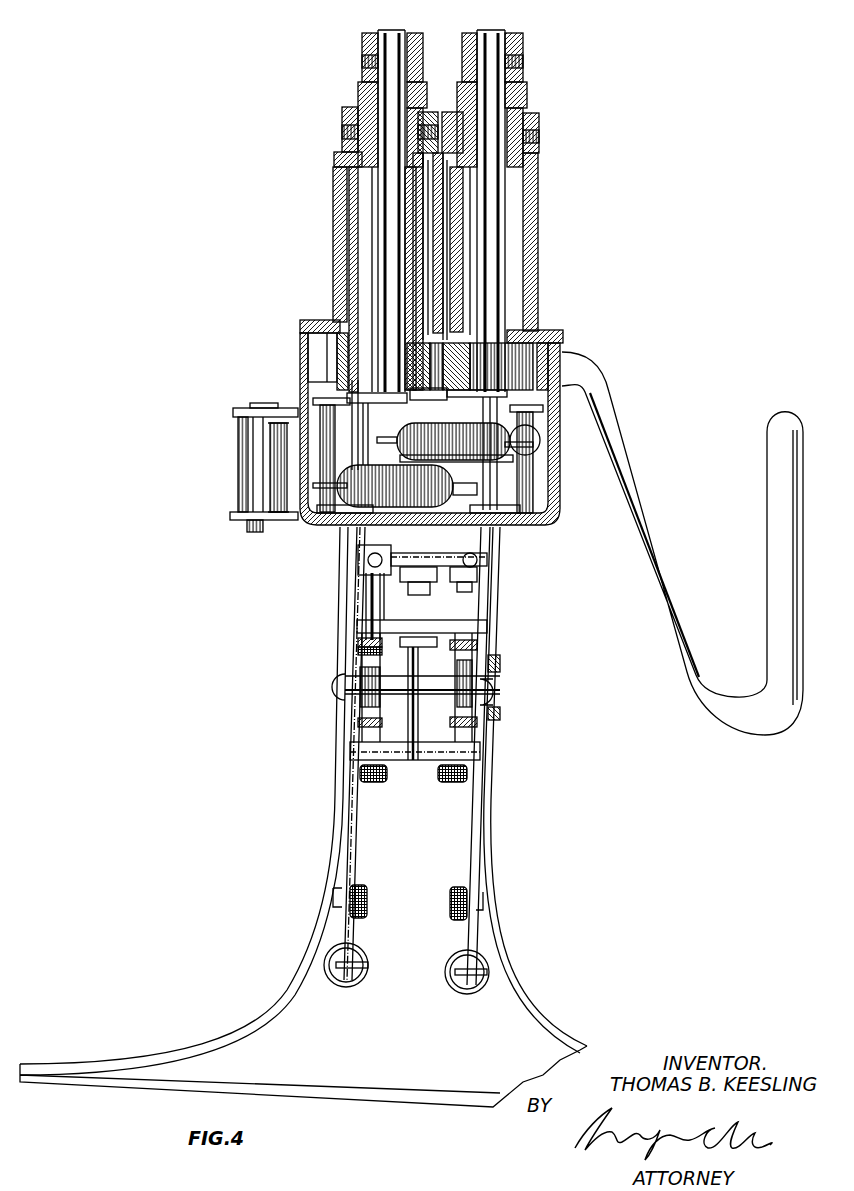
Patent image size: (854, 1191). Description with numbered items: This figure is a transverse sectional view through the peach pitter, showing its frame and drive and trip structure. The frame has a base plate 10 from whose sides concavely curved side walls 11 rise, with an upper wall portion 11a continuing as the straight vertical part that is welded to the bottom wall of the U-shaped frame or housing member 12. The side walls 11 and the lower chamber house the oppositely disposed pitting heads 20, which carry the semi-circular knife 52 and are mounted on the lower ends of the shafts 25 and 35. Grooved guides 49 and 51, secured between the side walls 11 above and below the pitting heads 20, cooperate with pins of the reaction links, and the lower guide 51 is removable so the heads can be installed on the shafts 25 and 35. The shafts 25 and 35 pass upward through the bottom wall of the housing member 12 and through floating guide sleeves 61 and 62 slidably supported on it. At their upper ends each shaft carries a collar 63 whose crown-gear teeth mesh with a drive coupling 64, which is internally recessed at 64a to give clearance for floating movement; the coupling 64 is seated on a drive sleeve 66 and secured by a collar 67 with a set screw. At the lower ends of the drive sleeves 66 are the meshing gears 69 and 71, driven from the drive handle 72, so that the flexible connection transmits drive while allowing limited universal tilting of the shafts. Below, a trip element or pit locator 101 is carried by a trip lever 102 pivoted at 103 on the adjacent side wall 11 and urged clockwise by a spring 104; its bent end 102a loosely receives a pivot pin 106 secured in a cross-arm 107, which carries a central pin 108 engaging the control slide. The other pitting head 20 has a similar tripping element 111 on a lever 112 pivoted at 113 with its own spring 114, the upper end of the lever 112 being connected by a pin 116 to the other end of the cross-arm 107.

The base plate 10 is at (405, 1090).
The side wall 11 is at (489, 838).
The upright standard wall 11a is at (337, 835).
The U-shaped frame or housing member 12 is at (522, 530).
The pitting head 20 is at (340, 708).
The drive shaft 25 is at (372, 242).
The shaft 35 is at (500, 231).
The grooved guide 49 is at (365, 619).
The lower guide 51 is at (478, 742).
The knife 52 is at (472, 654).
The floating guide sleeve 61 is at (386, 430).
The floating guide sleeve 62 is at (399, 486).
The collar 63 is at (362, 45).
The drive coupling 64 is at (358, 95).
The internal recess 64a is at (362, 165).
The drive sleeve 66 is at (348, 197).
The collar 67 is at (342, 117).
The gear 69 is at (327, 360).
The gear 71 is at (535, 335).
The drive handle 72 is at (655, 488).
The trip element or pit locator 101 is at (340, 686).
The trip lever 102 is at (352, 802).
The bent end 102a is at (390, 586).
The pivot 103 is at (367, 895).
The spring 104 is at (352, 955).
The pivot pin 106 is at (358, 547).
The cross-arm 107 is at (394, 545).
The central pin 108 is at (438, 596).
The tripping element 111 is at (482, 702).
The lever 112 is at (471, 805).
The pivot 113 is at (459, 896).
The spring 114 is at (448, 988).
The pin 116 is at (470, 592).